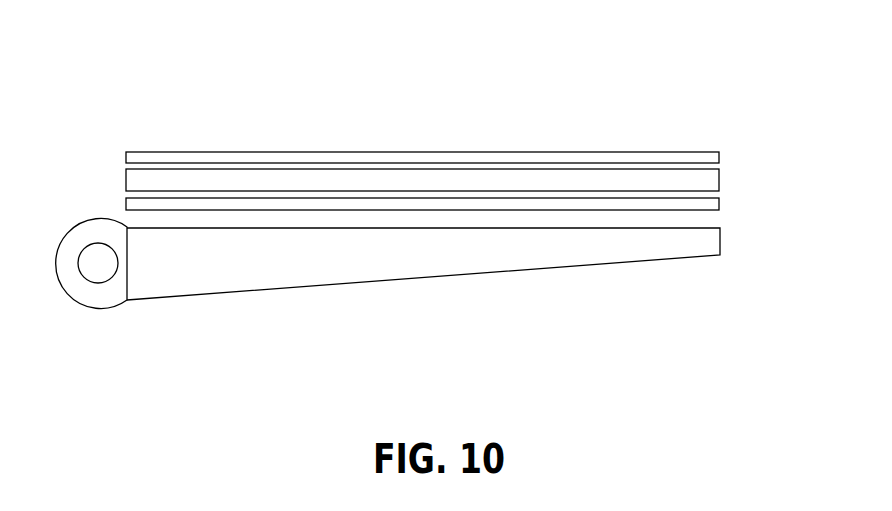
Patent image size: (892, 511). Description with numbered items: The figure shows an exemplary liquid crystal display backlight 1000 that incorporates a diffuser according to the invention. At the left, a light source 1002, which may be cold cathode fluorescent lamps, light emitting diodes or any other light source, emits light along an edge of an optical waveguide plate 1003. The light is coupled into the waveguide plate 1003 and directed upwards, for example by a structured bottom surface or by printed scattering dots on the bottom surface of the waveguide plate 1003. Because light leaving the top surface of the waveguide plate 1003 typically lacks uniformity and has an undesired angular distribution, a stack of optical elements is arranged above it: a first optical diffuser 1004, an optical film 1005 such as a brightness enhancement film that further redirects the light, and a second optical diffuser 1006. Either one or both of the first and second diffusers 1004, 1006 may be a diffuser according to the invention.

The liquid crystal display backlight 1000 is at (666, 50).
The light source 1002 is at (88, 308).
The optical waveguide plate 1003 is at (572, 267).
The first optical diffuser 1004 is at (719, 198).
The optical film 1005 is at (719, 179).
The second optical diffuser 1006 is at (157, 151).